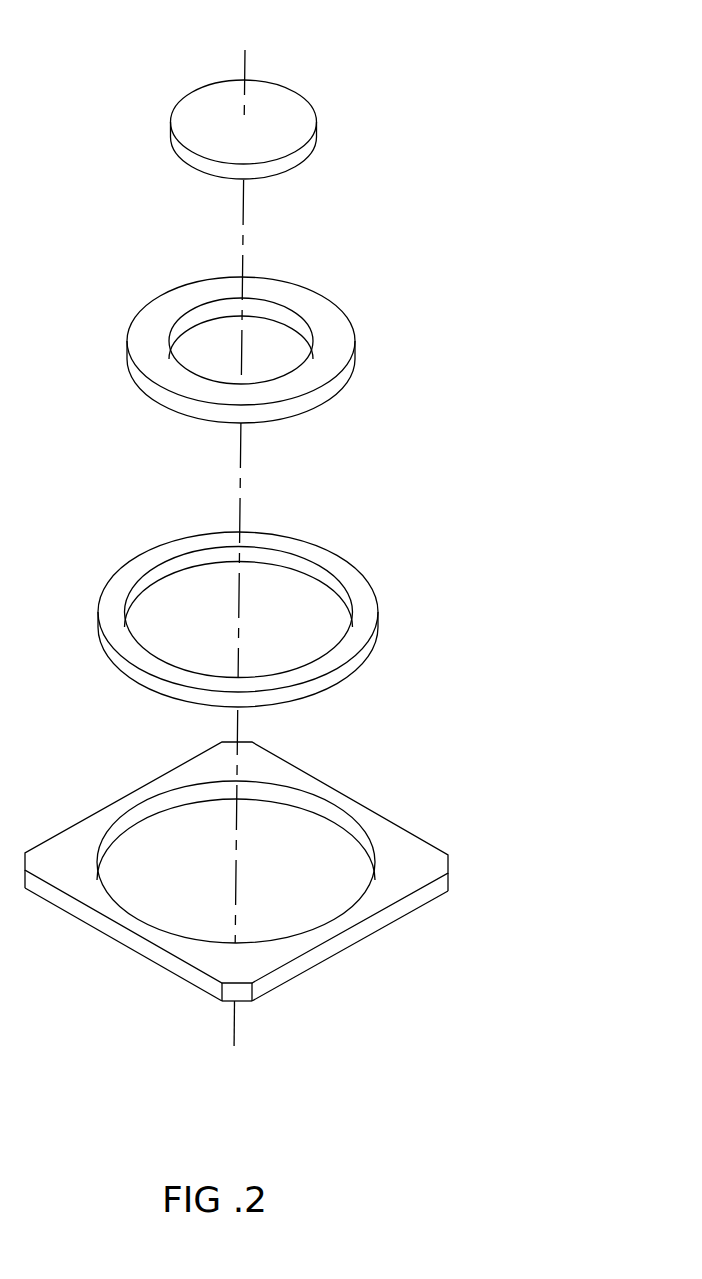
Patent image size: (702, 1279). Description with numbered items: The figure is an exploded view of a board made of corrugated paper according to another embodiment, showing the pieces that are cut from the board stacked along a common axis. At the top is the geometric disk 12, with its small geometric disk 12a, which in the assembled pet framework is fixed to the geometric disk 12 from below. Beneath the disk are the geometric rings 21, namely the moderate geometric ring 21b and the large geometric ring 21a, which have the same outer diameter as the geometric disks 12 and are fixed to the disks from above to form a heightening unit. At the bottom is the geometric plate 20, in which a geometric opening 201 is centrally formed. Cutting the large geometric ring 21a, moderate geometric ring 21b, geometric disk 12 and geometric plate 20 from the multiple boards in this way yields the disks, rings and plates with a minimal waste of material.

The geometric disk 12 is at (266, 96).
The small geometric disk 12a is at (290, 105).
The geometric ring 21 is at (314, 464).
The large geometric ring 21a is at (347, 575).
The moderate geometric ring 21b is at (313, 302).
The geometric plate 20 is at (306, 871).
The geometric opening 201 is at (343, 860).